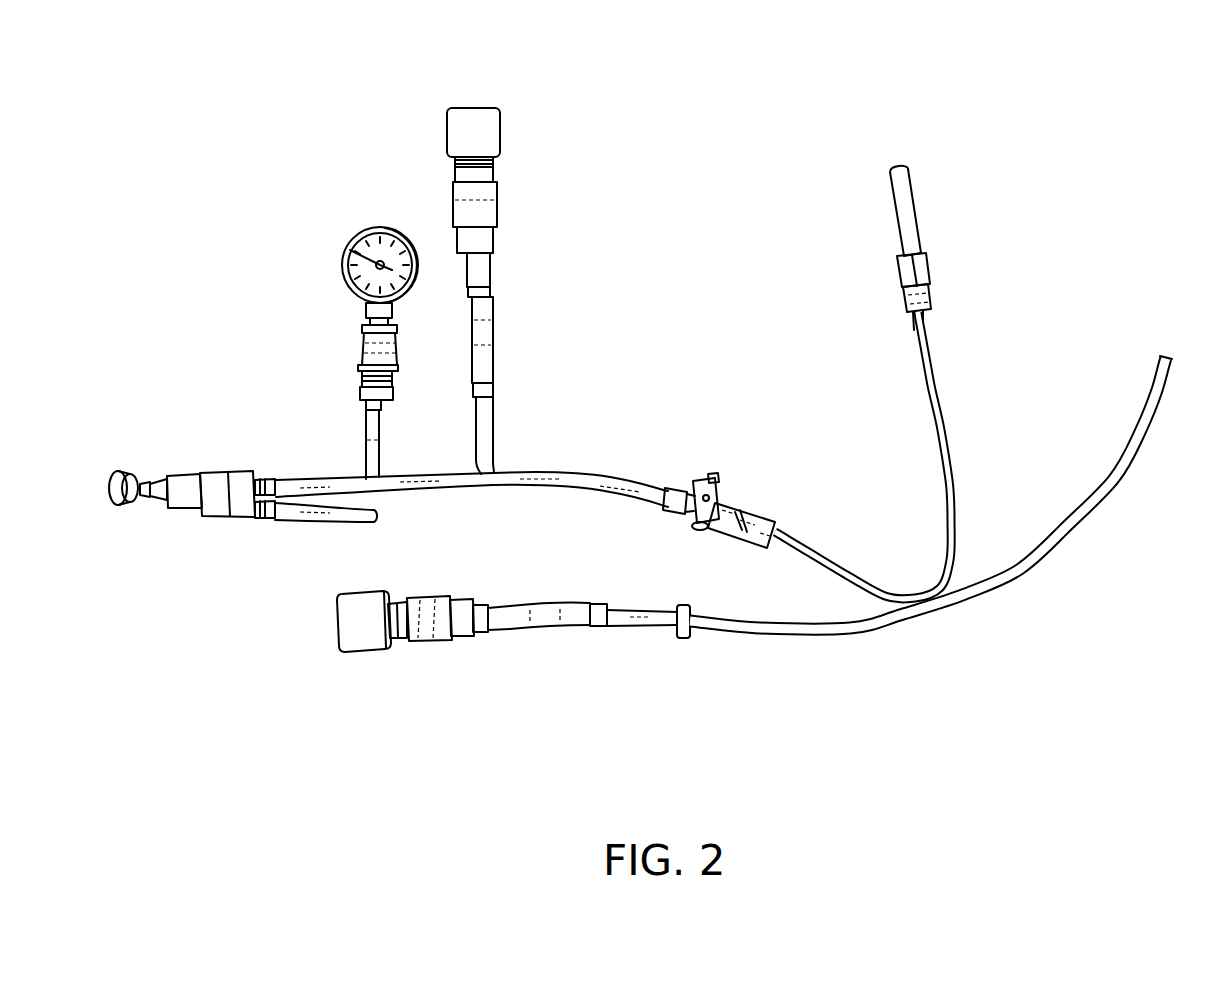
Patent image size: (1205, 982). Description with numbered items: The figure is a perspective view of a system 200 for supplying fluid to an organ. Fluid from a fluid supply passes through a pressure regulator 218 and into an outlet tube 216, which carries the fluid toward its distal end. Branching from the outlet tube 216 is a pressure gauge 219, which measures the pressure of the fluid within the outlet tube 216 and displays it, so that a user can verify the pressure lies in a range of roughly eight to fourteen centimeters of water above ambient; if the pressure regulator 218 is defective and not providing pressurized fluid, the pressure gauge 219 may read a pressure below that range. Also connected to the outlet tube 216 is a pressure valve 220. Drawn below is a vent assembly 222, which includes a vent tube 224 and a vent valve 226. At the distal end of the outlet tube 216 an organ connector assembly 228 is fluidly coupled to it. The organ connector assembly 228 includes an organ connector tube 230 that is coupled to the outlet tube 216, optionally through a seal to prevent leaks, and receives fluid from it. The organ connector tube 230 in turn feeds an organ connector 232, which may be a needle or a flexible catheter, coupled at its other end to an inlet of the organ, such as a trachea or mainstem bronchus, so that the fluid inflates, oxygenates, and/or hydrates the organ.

The system 200 is at (155, 85).
The outlet tube 216 is at (626, 483).
The pressure regulator 218 is at (148, 481).
The pressure gauge 219 is at (382, 252).
The pressure valve 220 is at (476, 174).
The vent assembly 222 is at (644, 662).
The vent tube 224 is at (741, 640).
The vent valve 226 is at (365, 640).
The organ connector assembly 228 is at (959, 190).
The organ connector tube 230 is at (942, 437).
The organ connector 232 is at (899, 183).